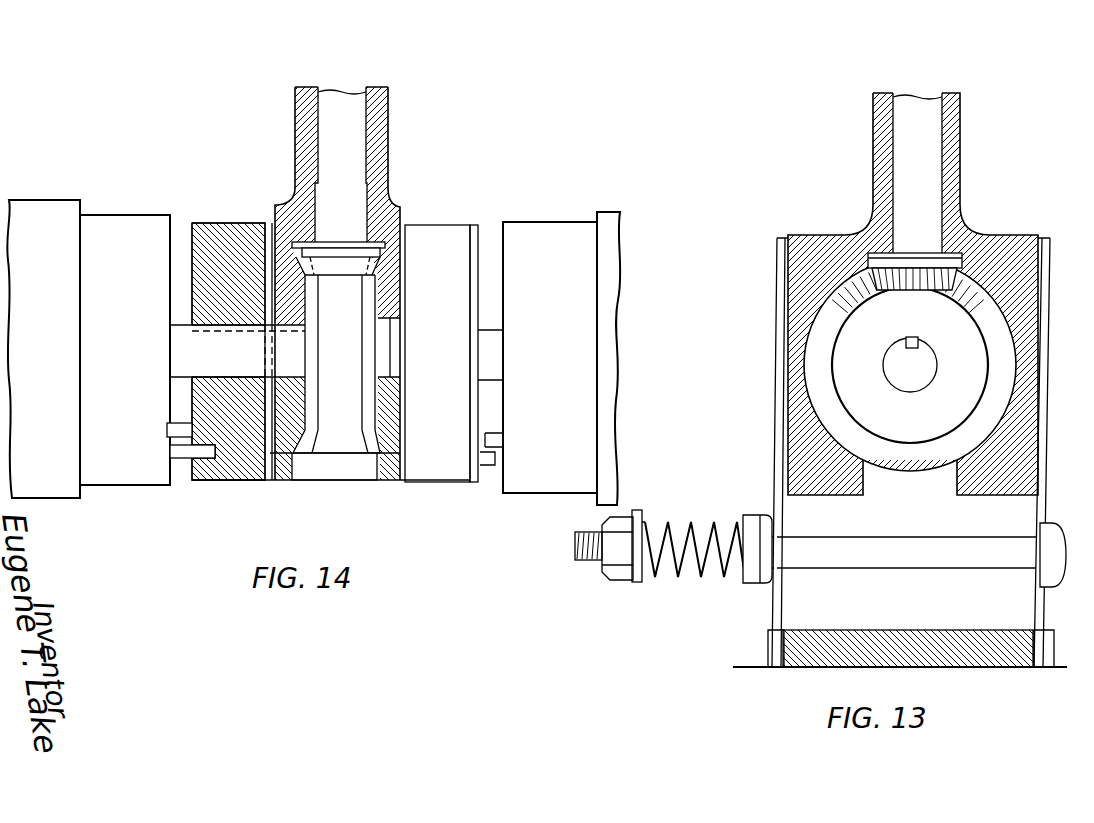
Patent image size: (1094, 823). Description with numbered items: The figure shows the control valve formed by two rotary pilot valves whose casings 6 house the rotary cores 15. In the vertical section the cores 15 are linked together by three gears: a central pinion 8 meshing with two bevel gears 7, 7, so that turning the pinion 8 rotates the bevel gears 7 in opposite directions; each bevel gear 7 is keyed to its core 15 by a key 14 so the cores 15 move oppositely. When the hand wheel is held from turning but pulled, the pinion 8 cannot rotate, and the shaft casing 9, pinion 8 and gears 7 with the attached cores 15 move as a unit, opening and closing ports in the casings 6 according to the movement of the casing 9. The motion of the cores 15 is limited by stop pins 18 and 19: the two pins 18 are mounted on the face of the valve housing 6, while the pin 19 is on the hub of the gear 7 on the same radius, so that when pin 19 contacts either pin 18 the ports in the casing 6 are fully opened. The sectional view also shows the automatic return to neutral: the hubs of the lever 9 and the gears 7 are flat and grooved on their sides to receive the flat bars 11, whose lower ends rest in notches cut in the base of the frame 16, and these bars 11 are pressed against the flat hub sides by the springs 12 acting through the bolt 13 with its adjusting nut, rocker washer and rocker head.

In FIG. 14, the rotary pilot valve casing 6 is at (58, 200).
In FIG. 14, the bevel gear 7 is at (220, 223).
In FIG. 14, the pinion 8 is at (313, 210).
In FIG. 13, the pinion 8 is at (887, 237).
In FIG. 14, the shaft casing 9 is at (389, 163).
In FIG. 13, the shaft casing 9 is at (788, 235).
In FIG. 13, the flat bar 11 is at (771, 413).
In FIG. 13, the spring 12 is at (698, 521).
In FIG. 13, the bolt 13 is at (857, 558).
In FIG. 13, the key 14 is at (919, 338).
In FIG. 14, the core 15 is at (180, 323).
In FIG. 13, the core 15 is at (941, 367).
In FIG. 13, the frame 16 is at (928, 632).
In FIG. 14, the stop pin 18 is at (165, 433).
In FIG. 14, the stop pin 19 is at (180, 460).